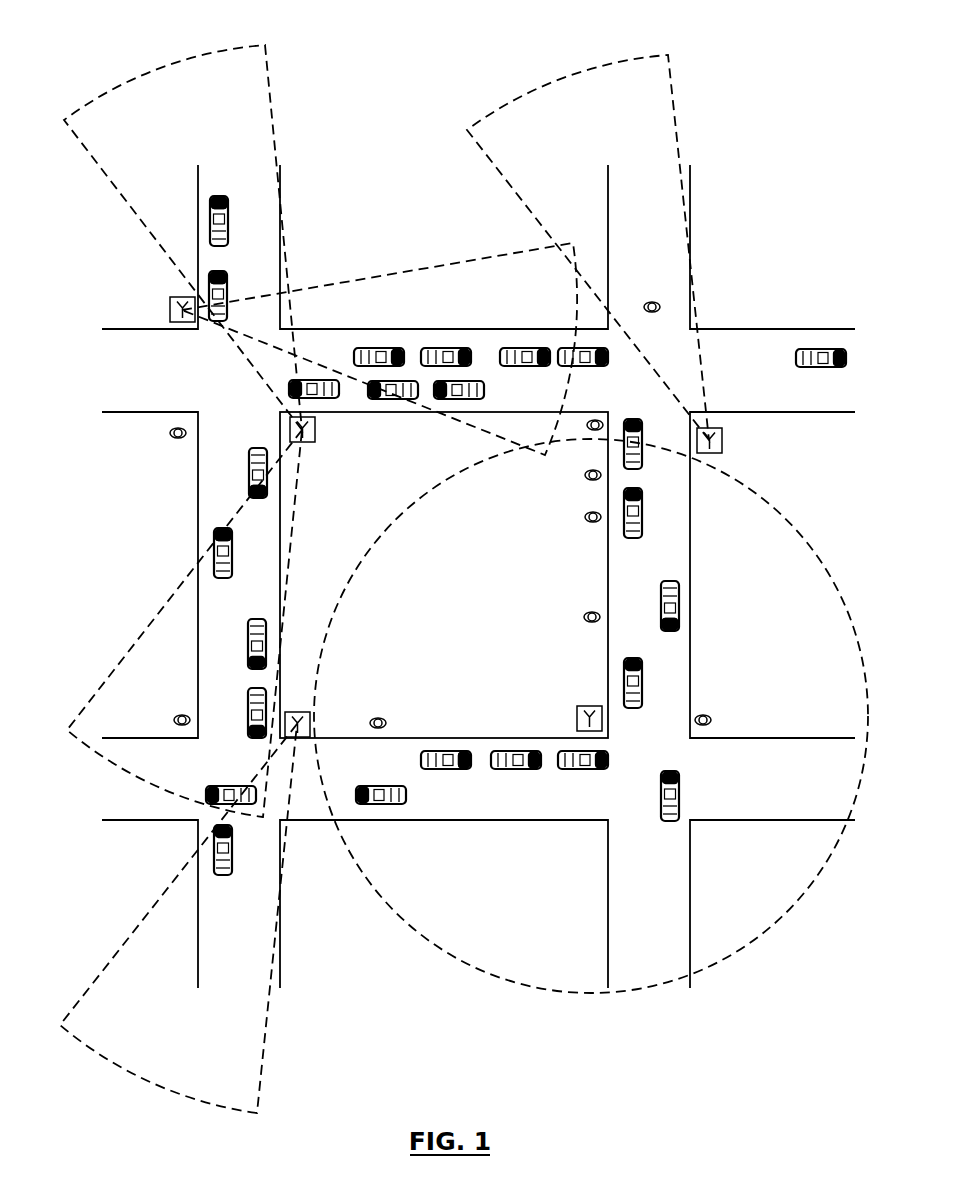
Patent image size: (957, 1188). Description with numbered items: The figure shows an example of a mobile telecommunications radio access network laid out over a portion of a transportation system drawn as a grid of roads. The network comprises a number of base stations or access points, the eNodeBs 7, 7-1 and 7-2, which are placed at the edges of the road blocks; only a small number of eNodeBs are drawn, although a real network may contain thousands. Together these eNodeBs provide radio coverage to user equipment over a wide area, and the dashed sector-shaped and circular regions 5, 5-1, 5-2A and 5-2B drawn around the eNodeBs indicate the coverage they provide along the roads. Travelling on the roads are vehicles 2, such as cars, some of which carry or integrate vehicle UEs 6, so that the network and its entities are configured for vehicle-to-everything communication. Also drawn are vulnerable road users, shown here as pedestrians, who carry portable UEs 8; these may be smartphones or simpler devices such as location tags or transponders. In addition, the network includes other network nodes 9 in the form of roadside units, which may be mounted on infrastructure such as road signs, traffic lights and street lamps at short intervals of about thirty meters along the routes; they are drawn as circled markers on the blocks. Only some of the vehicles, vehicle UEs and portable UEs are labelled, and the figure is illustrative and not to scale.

The vehicle 2 is at (229, 230).
The communication coverage area 5 is at (622, 62).
The communication coverage area of base station 7-1 5-1 is at (110, 962).
The communication coverage area of base station 7-2 5-2A is at (106, 680).
The communication coverage area of base station 7-2 5-2B is at (120, 85).
The vehicle UE 6 is at (218, 195).
The eNodeB 7 is at (169, 306).
The base station 7-1 is at (297, 712).
The base station 7-2 is at (316, 432).
The portable UE 8 is at (176, 440).
The network node 9 is at (476, 576).